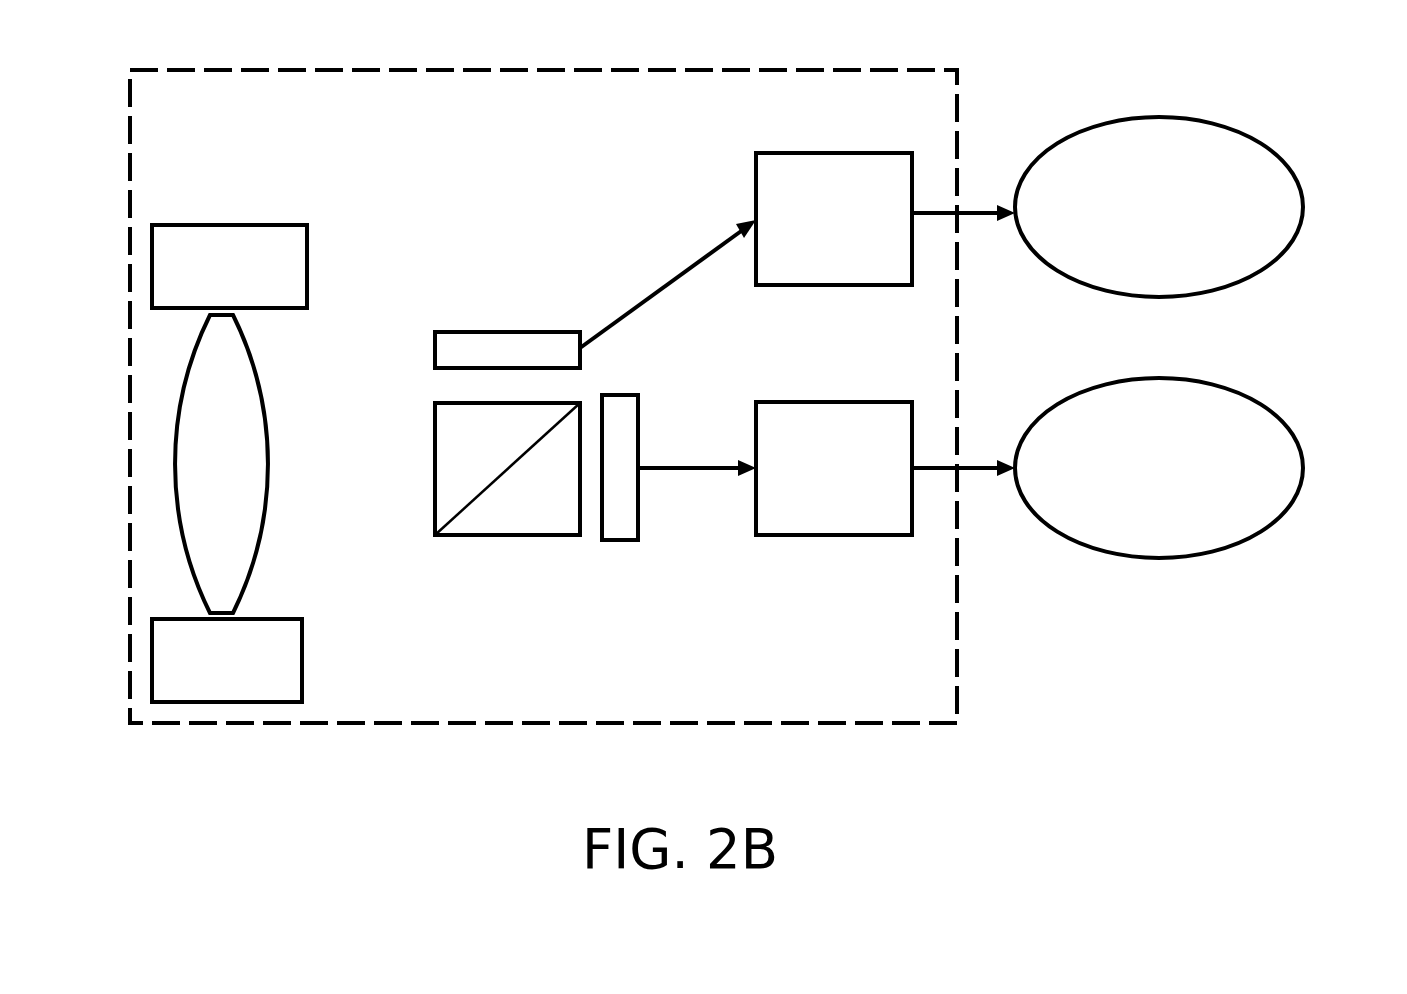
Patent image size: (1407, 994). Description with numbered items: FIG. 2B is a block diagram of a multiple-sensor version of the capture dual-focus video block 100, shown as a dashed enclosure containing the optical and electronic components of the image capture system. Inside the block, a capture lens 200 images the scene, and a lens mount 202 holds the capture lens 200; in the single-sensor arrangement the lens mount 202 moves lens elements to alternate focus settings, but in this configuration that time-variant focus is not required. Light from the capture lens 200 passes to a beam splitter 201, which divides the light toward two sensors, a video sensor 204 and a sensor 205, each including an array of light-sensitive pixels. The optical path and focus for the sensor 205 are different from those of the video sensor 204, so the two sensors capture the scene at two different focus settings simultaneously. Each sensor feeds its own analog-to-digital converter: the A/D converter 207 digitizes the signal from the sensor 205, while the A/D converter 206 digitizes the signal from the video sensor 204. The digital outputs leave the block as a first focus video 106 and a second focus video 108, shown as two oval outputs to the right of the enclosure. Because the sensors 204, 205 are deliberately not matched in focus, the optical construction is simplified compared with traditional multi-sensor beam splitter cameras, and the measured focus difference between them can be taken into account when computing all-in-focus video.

The capture dual-focus video block 100 is at (910, 70).
The first focus video 106 is at (1135, 117).
The second focus video 108 is at (1135, 378).
The capture lens 200 is at (263, 410).
The beam splitter 201 is at (497, 535).
The lens mount 202 is at (198, 225).
The video sensor 204 is at (617, 395).
The sensor 205 is at (463, 332).
The A/D converter 206 is at (805, 402).
The A/D converter 207 is at (805, 153).